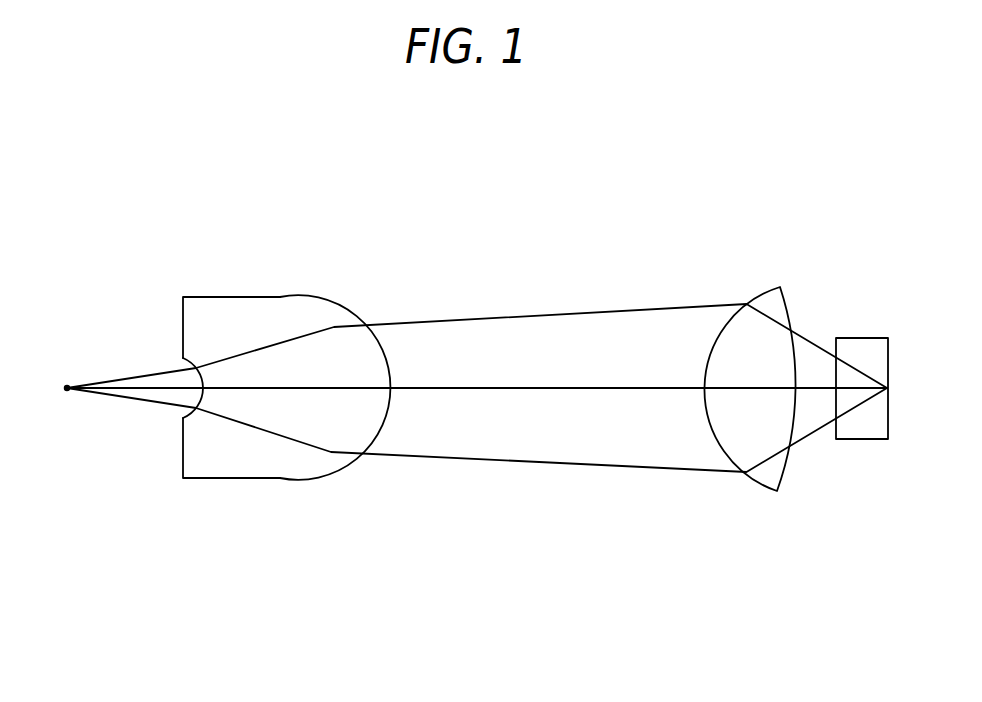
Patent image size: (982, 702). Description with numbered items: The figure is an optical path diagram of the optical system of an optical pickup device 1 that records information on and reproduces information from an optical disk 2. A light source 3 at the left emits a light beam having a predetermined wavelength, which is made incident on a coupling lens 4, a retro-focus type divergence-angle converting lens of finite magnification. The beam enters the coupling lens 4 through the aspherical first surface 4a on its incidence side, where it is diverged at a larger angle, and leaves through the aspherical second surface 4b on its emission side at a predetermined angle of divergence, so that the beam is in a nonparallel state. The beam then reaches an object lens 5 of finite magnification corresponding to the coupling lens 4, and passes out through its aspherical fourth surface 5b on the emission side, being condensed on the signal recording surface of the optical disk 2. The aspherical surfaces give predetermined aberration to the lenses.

The optical pickup device 1 is at (610, 236).
The optical disk 2 is at (865, 338).
The light source 3 is at (65, 385).
The coupling lens 4 is at (266, 366).
The first surface 4a is at (195, 398).
The second surface 4b is at (343, 435).
The object lens 5 is at (759, 368).
The fourth surface 5b is at (718, 445).